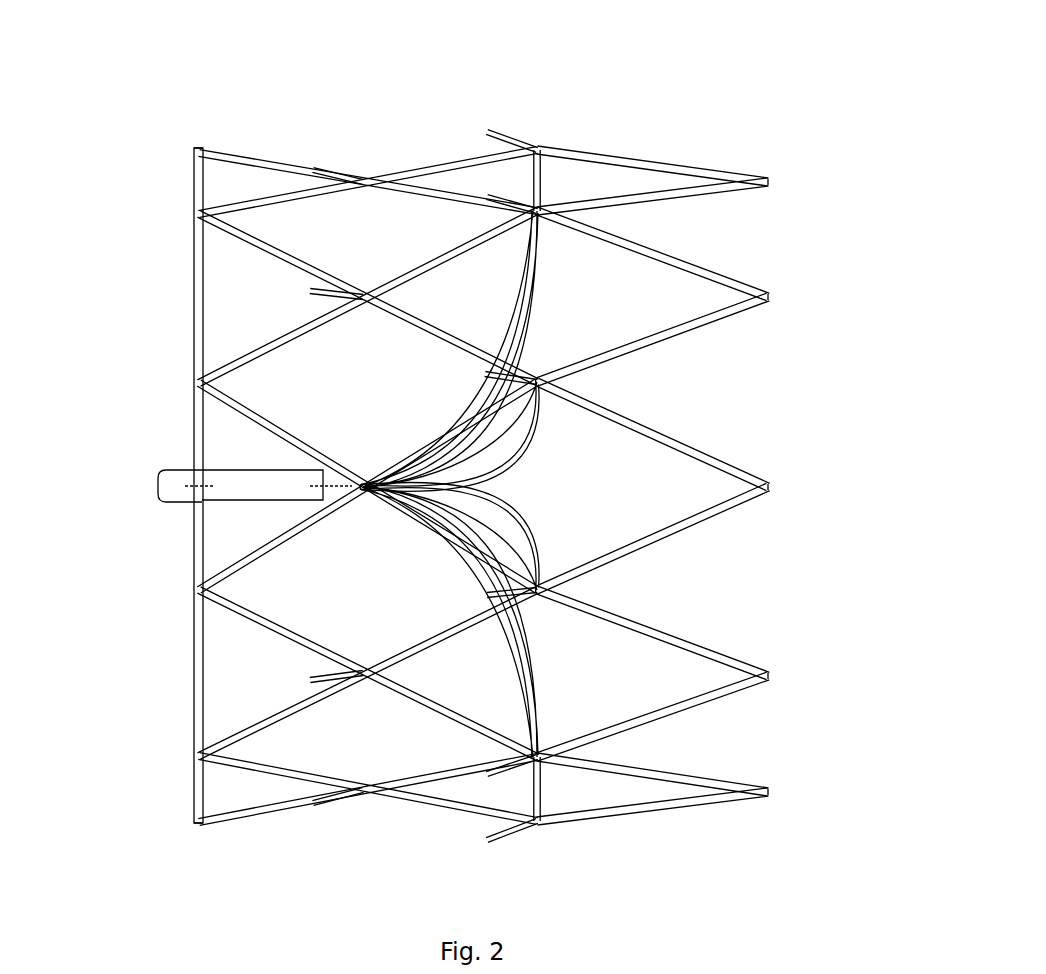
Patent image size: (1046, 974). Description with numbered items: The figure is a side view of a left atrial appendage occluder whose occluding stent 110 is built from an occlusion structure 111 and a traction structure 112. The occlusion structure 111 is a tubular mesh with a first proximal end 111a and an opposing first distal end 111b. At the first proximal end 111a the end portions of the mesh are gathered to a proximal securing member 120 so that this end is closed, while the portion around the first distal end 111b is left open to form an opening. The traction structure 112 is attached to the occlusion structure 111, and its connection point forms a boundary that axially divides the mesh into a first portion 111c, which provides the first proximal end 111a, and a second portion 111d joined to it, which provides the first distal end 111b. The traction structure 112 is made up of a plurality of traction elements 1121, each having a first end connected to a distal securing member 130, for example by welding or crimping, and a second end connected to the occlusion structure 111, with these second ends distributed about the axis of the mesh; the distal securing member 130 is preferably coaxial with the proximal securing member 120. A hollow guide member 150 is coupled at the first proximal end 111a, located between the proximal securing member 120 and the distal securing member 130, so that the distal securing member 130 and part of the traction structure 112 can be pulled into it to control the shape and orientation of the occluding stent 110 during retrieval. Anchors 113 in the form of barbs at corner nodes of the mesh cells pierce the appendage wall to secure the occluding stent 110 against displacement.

The occluding stent 110 is at (830, 202).
The occlusion structure 111 is at (337, 80).
The first proximal end 111a is at (162, 220).
The first distal end 111b is at (812, 530).
The first portion 111c is at (197, 140).
The second portion 111d is at (770, 140).
The traction structure 112 is at (540, 313).
The traction elements 1121 is at (527, 442).
The anchors 113 is at (513, 833).
The proximal securing member 120 is at (178, 490).
The distal securing member 130 is at (345, 488).
The hollow guide member 150 is at (280, 480).